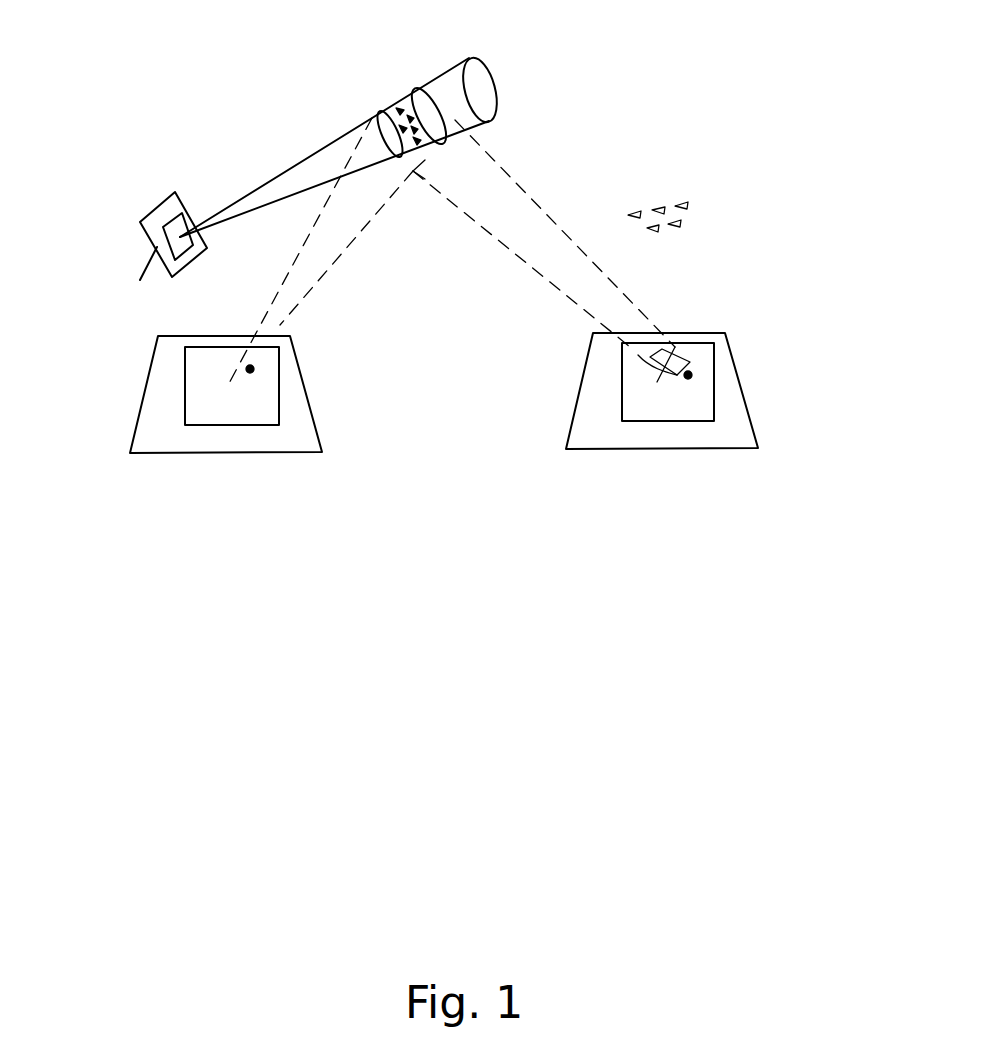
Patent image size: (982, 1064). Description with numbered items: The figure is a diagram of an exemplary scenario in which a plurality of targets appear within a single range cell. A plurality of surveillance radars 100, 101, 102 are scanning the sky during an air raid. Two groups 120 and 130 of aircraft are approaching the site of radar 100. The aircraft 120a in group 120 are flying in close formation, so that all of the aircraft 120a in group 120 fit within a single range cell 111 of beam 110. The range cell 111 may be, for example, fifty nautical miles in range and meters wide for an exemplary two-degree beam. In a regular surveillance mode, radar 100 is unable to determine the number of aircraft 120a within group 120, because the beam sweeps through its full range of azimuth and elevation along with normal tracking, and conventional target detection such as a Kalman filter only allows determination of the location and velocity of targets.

The surveillance radar 100 is at (140, 193).
The surveillance radar 101 is at (336, 368).
The surveillance radar 102 is at (771, 366).
The beam 110 is at (316, 150).
The range cell 111 is at (391, 108).
The group of aircraft 120 is at (388, 98).
The aircraft 120a is at (424, 145).
The group of aircraft 130 is at (658, 208).